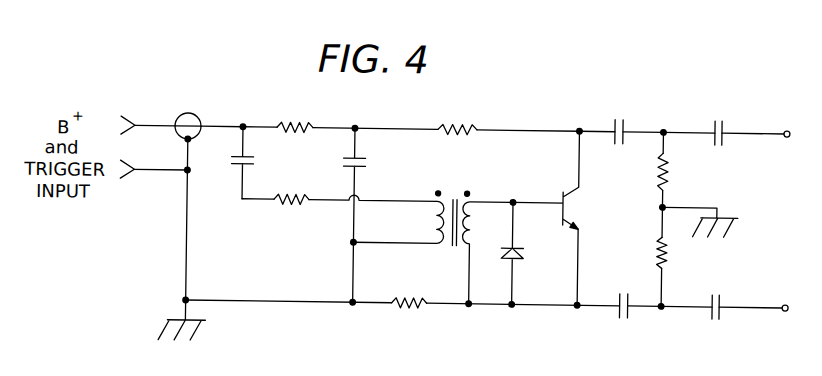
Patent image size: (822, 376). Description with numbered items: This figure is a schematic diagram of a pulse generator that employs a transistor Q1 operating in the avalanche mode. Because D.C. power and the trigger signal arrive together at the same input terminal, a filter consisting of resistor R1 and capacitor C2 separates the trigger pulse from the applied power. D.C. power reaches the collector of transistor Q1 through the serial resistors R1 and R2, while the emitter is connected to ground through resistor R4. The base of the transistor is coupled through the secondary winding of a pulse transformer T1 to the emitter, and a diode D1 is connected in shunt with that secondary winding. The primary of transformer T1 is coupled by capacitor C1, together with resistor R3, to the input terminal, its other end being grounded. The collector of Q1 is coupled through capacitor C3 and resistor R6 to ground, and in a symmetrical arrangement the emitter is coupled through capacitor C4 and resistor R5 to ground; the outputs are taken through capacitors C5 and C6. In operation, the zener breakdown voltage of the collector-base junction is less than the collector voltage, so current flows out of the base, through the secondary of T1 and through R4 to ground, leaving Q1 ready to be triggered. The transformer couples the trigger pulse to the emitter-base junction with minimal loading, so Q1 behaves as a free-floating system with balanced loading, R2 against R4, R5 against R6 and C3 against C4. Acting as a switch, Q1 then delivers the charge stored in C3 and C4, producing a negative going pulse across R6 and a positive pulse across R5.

The resistor R1 is at (295, 114).
The resistor R2 is at (458, 116).
The resistor R3 is at (291, 212).
The resistor R4 is at (411, 312).
The resistor R5 is at (647, 257).
The resistor R6 is at (679, 171).
The capacitor C1 is at (258, 163).
The capacitor C2 is at (369, 185).
The capacitor C3 is at (616, 119).
The capacitor C4 is at (623, 318).
The capacitor C5 is at (718, 120).
The capacitor C6 is at (718, 318).
The pulse transformer T1 is at (433, 234).
The diode D1 is at (529, 252).
The transistor Q1 is at (559, 217).